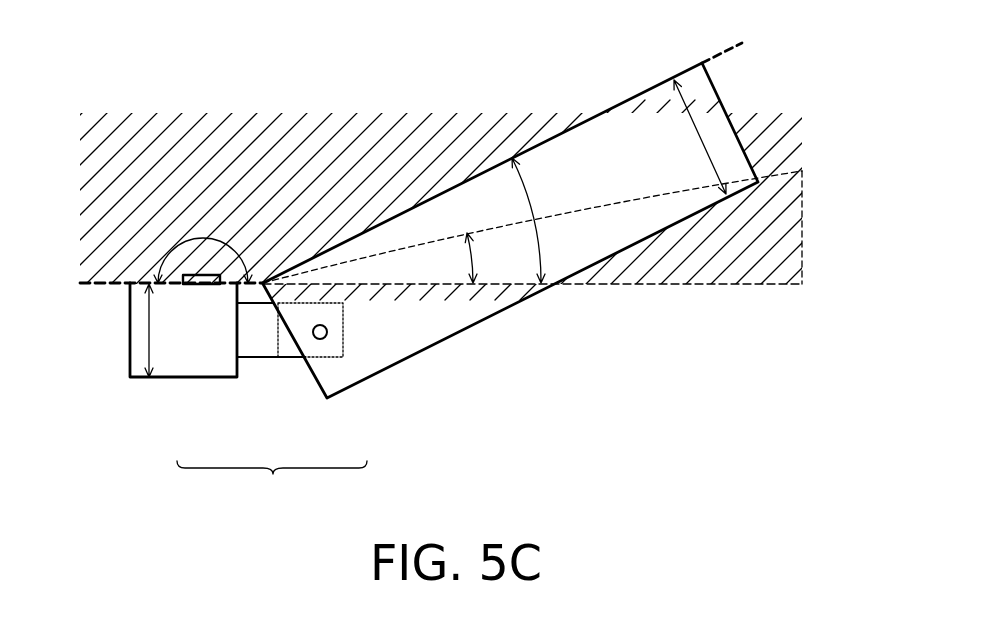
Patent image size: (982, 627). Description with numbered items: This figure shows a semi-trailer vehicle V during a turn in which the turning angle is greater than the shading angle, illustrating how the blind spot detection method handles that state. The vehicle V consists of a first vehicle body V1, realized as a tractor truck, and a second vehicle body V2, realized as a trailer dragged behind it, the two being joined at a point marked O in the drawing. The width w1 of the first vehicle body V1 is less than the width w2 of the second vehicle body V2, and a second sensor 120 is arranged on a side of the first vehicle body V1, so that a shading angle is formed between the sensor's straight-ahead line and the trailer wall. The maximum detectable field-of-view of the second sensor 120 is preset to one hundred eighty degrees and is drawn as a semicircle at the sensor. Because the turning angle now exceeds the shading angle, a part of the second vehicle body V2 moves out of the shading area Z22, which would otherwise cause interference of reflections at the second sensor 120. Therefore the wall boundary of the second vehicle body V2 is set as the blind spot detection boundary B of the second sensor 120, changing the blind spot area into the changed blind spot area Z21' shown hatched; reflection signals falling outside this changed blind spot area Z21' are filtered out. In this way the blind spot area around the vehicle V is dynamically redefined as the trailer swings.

The second sensor 120 is at (193, 286).
The changed blind spot area Z21' is at (491, 171).
The shading area Z22 is at (802, 238).
The blind spot detection boundary B is at (734, 45).
The first vehicle body V1 is at (184, 378).
The second vehicle body V2 is at (338, 398).
The vehicle V is at (272, 483).
The reference point O is at (310, 330).
The width of the first vehicle body w1 is at (149, 330).
The width of the second vehicle body w2 is at (700, 97).